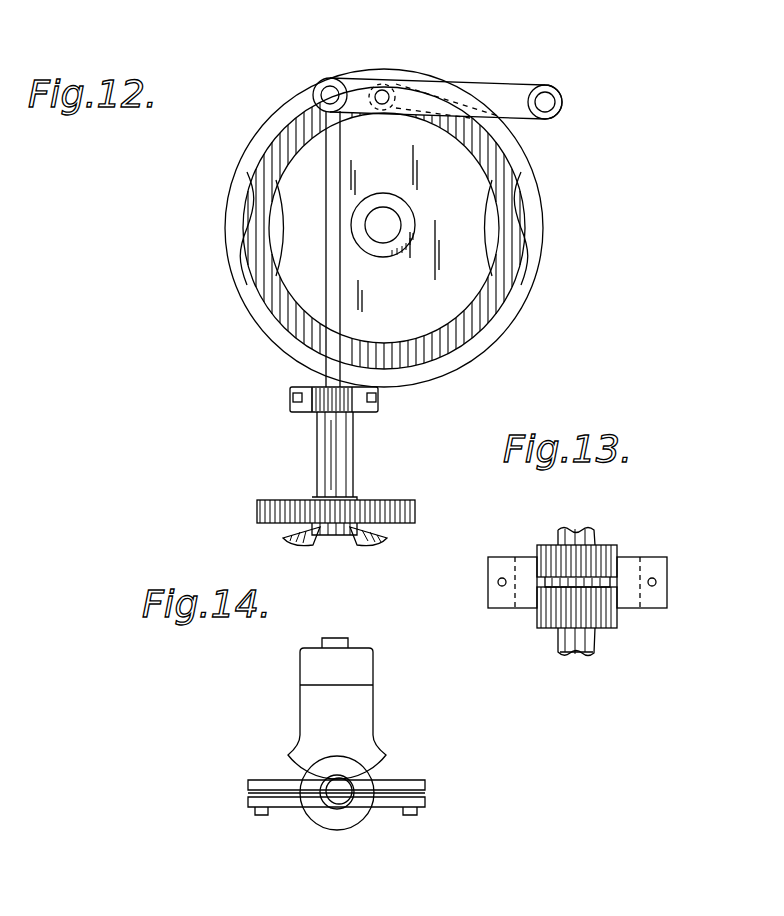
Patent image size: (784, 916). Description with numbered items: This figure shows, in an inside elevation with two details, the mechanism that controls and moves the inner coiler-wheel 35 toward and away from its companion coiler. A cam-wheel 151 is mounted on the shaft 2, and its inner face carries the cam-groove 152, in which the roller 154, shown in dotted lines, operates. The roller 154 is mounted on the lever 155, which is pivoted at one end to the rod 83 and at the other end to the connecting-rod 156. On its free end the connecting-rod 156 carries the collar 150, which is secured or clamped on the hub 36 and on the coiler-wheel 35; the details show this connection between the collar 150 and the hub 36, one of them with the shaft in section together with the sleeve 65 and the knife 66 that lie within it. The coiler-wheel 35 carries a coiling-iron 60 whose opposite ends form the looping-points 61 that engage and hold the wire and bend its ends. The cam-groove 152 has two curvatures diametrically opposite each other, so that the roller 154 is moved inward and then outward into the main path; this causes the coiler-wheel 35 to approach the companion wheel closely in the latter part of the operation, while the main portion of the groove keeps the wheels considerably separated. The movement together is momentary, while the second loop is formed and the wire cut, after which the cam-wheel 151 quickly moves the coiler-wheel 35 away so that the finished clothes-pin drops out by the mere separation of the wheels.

In FIG. 12, the shaft 2 is at (398, 222).
In FIG. 12, the coiler-wheel 35 is at (415, 510).
In FIG. 12, the hub 36 is at (353, 453).
In FIG. 13, the hub 36 is at (603, 547).
In FIG. 14, the hub 36 is at (337, 760).
In FIG. 12, the coiling-iron 60 is at (330, 537).
In FIG. 12, the looping-points 61 is at (283, 538).
In FIG. 13, the sleeve 65 is at (595, 647).
In FIG. 14, the sleeve 65 is at (340, 810).
In FIG. 14, the knife 66 is at (353, 788).
In FIG. 12, the rod 83 is at (555, 104).
In FIG. 12, the collar 150 is at (308, 410).
In FIG. 13, the collar 150 is at (660, 569).
In FIG. 14, the collar 150 is at (365, 703).
In FIG. 12, the cam-wheel 151 is at (384, 228).
In FIG. 12, the cam-groove 152 is at (502, 225).
In FIG. 12, the roller 154 is at (385, 88).
In FIG. 12, the lever 155 is at (446, 98).
In FIG. 12, the connecting-rod 156 is at (328, 243).
In FIG. 14, the connecting-rod 156 is at (340, 667).